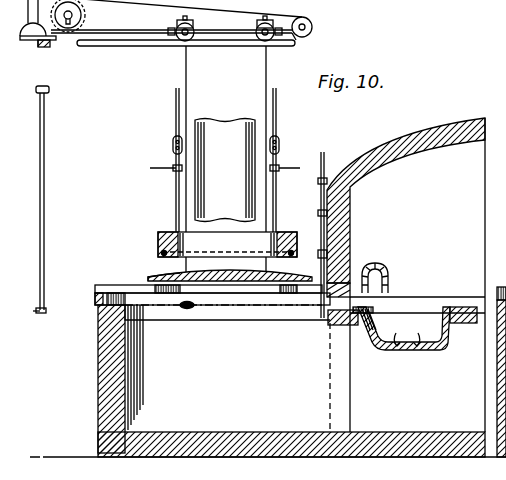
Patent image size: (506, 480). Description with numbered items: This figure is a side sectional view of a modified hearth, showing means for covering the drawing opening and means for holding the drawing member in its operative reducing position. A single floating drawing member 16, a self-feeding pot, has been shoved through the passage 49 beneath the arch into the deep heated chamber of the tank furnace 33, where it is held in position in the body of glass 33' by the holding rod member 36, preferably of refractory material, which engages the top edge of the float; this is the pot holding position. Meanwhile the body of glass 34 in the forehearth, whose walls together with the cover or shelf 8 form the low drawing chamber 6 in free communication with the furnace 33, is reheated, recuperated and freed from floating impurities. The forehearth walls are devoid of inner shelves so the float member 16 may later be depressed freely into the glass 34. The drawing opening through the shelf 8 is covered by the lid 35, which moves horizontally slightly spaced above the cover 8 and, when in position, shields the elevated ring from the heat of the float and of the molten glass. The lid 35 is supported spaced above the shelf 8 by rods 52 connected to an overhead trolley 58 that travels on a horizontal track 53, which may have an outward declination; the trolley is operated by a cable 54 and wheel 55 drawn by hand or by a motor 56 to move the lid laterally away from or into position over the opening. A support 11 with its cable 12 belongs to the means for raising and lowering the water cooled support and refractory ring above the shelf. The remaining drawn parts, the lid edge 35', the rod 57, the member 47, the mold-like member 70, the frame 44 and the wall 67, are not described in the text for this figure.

The wheel 55 is at (85, 15).
The cable 54 is at (309, 13).
The overhead trolley 58 is at (232, 33).
The horizontal track 53 is at (128, 47).
The motor 56 is at (40, 47).
The rod 57 is at (45, 126).
The rods 52 is at (263, 82).
The support 11 is at (176, 190).
The rod 47 is at (321, 185).
The mold ring 70 is at (161, 232).
The lid 35 is at (230, 310).
The plate edge 35' is at (142, 256).
The cover or shelf 8 is at (112, 286).
The cable 12 is at (95, 298).
The frame 44 is at (97, 304).
The wall 67 is at (130, 370).
The body of glass 34 is at (171, 321).
The rod member 36 is at (318, 305).
The tank furnace 33 is at (406, 275).
The body of glass 33' is at (417, 359).
The passage 49 is at (352, 282).
The drawing member 16 is at (433, 343).
The drawing chamber 6 is at (501, 266).